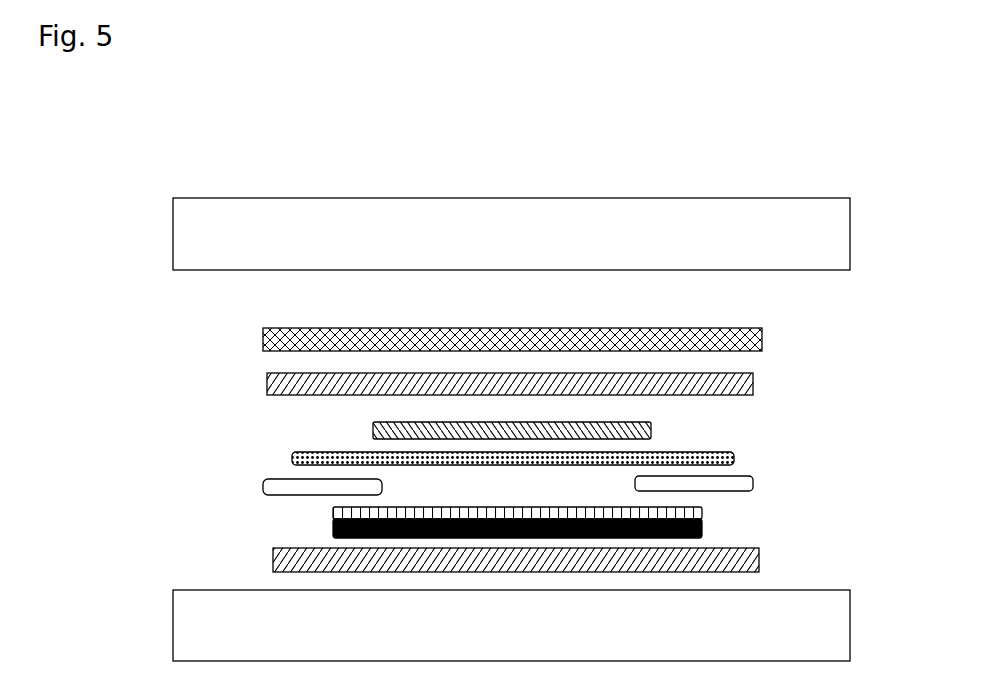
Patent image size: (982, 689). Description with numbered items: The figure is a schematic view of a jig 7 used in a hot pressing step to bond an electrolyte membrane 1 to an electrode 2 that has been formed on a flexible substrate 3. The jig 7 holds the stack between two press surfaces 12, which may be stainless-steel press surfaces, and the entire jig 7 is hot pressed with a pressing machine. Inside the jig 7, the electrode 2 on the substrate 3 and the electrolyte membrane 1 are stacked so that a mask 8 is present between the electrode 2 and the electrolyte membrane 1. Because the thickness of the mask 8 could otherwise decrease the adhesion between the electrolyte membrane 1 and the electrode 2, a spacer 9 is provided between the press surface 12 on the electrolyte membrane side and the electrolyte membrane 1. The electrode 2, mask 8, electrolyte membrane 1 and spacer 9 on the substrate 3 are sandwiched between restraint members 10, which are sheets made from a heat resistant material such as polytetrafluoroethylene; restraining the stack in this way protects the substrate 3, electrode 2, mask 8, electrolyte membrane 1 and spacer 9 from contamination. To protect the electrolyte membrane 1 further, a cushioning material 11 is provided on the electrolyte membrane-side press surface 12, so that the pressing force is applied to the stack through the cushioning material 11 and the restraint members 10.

The jig 7 is at (630, 180).
The press surface 12 is at (217, 233).
The cushioning material 11 is at (286, 338).
The restraint member 10 is at (286, 381).
The spacer 9 is at (373, 431).
The electrolyte membrane 1 is at (728, 450).
The mask 8 is at (275, 483).
The electrode 2 is at (703, 510).
The flexible substrate 3 is at (704, 527).